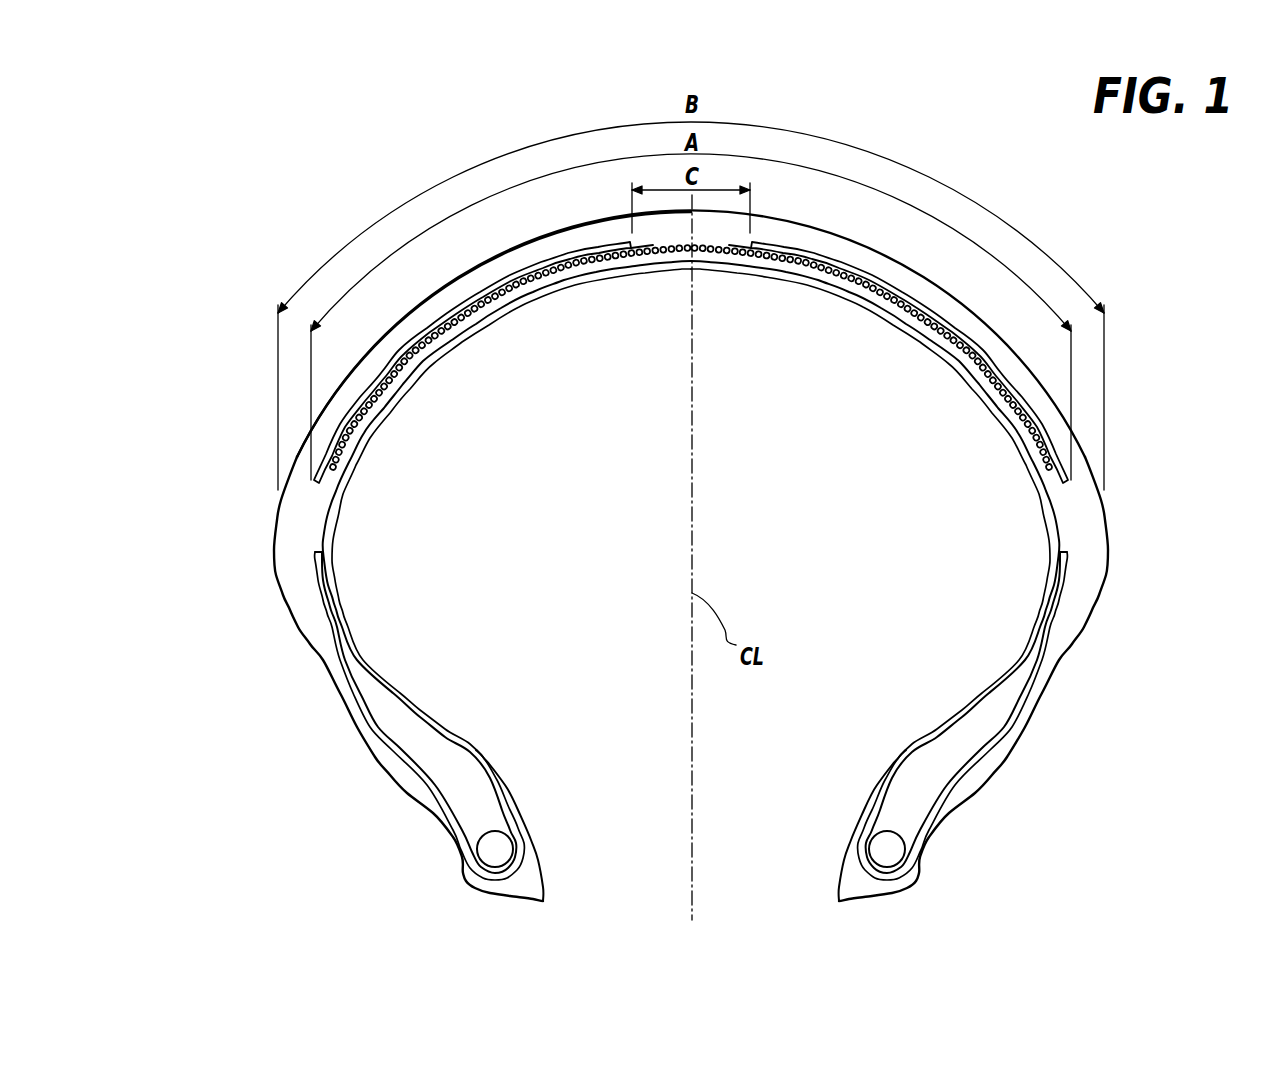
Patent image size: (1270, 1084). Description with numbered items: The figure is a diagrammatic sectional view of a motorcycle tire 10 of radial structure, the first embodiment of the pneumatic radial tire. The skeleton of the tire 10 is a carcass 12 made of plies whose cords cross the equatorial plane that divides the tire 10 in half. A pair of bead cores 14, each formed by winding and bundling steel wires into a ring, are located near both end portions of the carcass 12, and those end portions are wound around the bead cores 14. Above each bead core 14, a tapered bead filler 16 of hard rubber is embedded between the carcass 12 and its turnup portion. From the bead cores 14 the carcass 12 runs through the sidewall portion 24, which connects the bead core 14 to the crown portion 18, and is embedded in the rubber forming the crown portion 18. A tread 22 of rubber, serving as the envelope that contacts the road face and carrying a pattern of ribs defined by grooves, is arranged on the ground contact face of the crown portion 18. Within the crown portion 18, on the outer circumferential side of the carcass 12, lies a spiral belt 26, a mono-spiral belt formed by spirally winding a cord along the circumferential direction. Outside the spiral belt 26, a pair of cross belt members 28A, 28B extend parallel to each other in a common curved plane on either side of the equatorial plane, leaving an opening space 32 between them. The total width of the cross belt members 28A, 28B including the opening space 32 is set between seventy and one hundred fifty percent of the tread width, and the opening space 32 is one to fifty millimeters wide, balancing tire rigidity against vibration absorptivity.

The motorcycle tire 10 is at (698, 522).
The carcass 12 is at (1060, 530).
The bead cores 14 is at (495, 849).
The bead filler 16 is at (463, 787).
The crown portion 18 is at (900, 250).
The tread 22 is at (476, 247).
The sidewall portion 24 is at (266, 593).
The spiral belt 26 is at (737, 254).
The cross belt member 28A is at (553, 253).
The cross belt member 28B is at (824, 252).
The opening space 32 is at (650, 254).